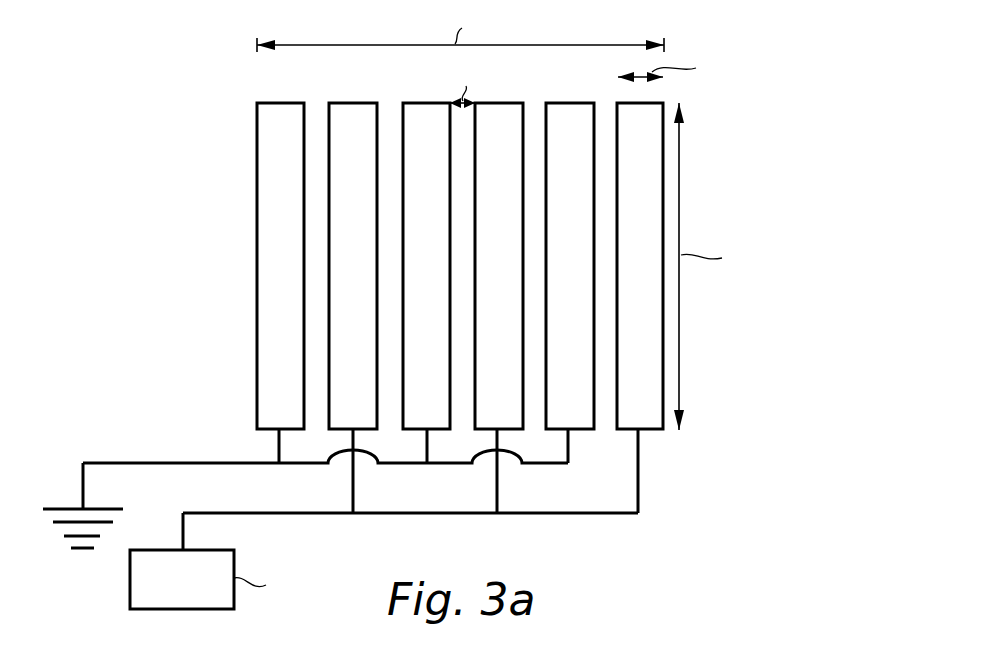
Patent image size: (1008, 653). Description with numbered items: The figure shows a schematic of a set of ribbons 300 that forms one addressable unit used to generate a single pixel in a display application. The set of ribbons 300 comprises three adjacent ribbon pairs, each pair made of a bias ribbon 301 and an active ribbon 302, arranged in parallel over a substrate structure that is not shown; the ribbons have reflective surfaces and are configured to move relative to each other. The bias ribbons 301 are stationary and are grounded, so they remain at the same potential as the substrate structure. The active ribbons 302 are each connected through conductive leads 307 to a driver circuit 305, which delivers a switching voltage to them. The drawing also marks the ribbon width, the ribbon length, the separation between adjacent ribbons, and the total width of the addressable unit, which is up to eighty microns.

The set of ribbons 300 is at (165, 74).
The bias ribbons 301 is at (262, 104).
The active ribbons 302 is at (353, 103).
The driver circuit 305 is at (130, 577).
The conductive leads 307 is at (353, 490).